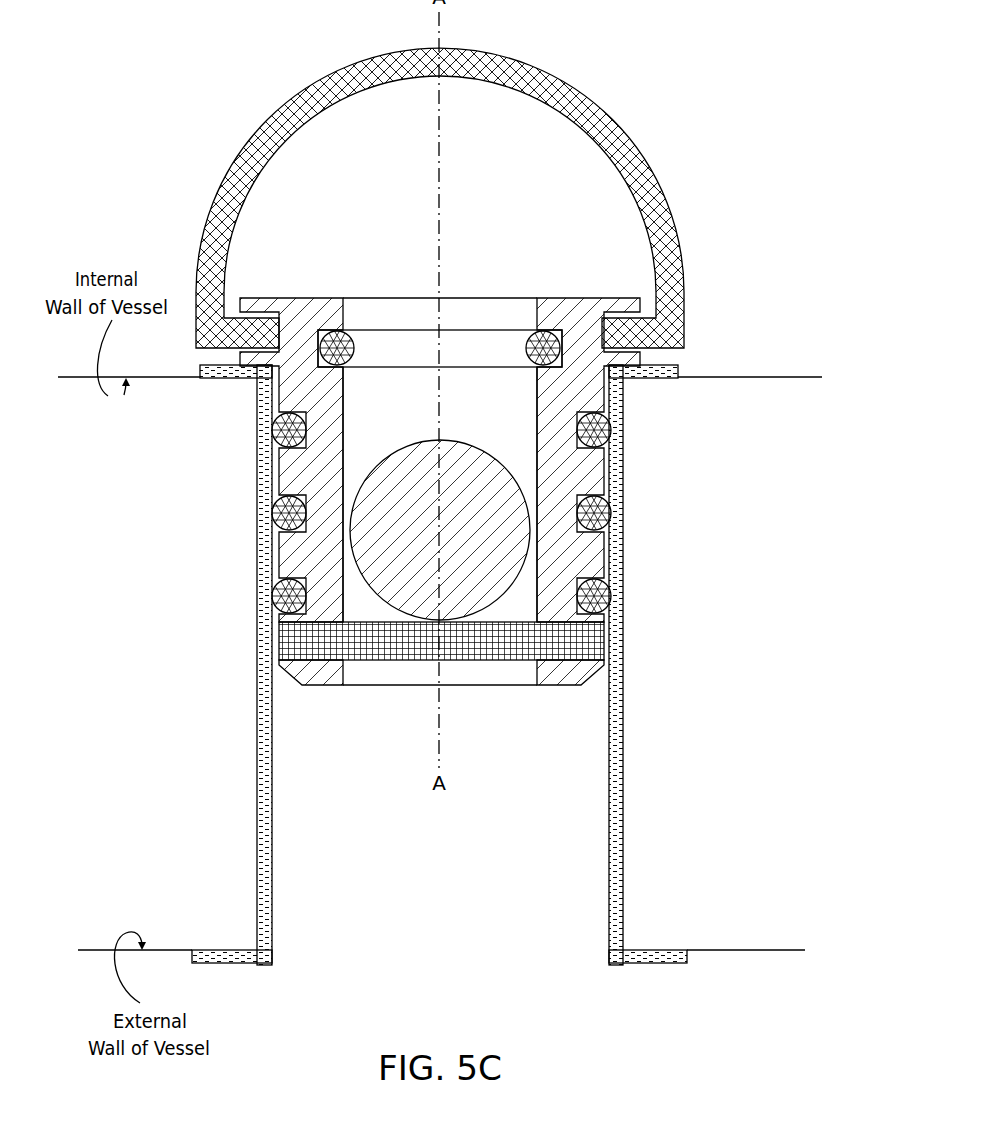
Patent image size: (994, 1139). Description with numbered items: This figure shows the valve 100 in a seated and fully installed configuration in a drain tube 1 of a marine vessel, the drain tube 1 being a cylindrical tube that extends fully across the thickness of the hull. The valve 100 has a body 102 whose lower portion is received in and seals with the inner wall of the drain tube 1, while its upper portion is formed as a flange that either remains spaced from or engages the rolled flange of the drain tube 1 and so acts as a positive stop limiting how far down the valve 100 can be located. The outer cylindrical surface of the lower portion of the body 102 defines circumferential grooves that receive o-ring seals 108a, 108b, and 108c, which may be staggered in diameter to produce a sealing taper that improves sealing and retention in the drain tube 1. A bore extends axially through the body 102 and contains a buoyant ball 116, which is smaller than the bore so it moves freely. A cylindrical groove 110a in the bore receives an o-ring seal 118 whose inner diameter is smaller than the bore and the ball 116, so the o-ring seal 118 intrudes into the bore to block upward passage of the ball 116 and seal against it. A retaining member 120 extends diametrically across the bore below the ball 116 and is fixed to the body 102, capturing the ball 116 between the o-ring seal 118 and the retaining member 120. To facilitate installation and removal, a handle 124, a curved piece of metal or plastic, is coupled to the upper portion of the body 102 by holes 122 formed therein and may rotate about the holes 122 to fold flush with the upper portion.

The drain tube 1 is at (628, 863).
The valve 100 is at (195, 111).
The body 102 is at (566, 690).
The o-ring seal 108a is at (612, 444).
The o-ring seal 108b is at (612, 501).
The o-ring seal 108c is at (612, 606).
The cylindrical groove 110a is at (472, 336).
The buoyant ball 116 is at (447, 438).
The o-ring seal 118 is at (356, 350).
The retaining member 120 is at (383, 652).
The holes 122 is at (258, 308).
The handle 124 is at (335, 76).